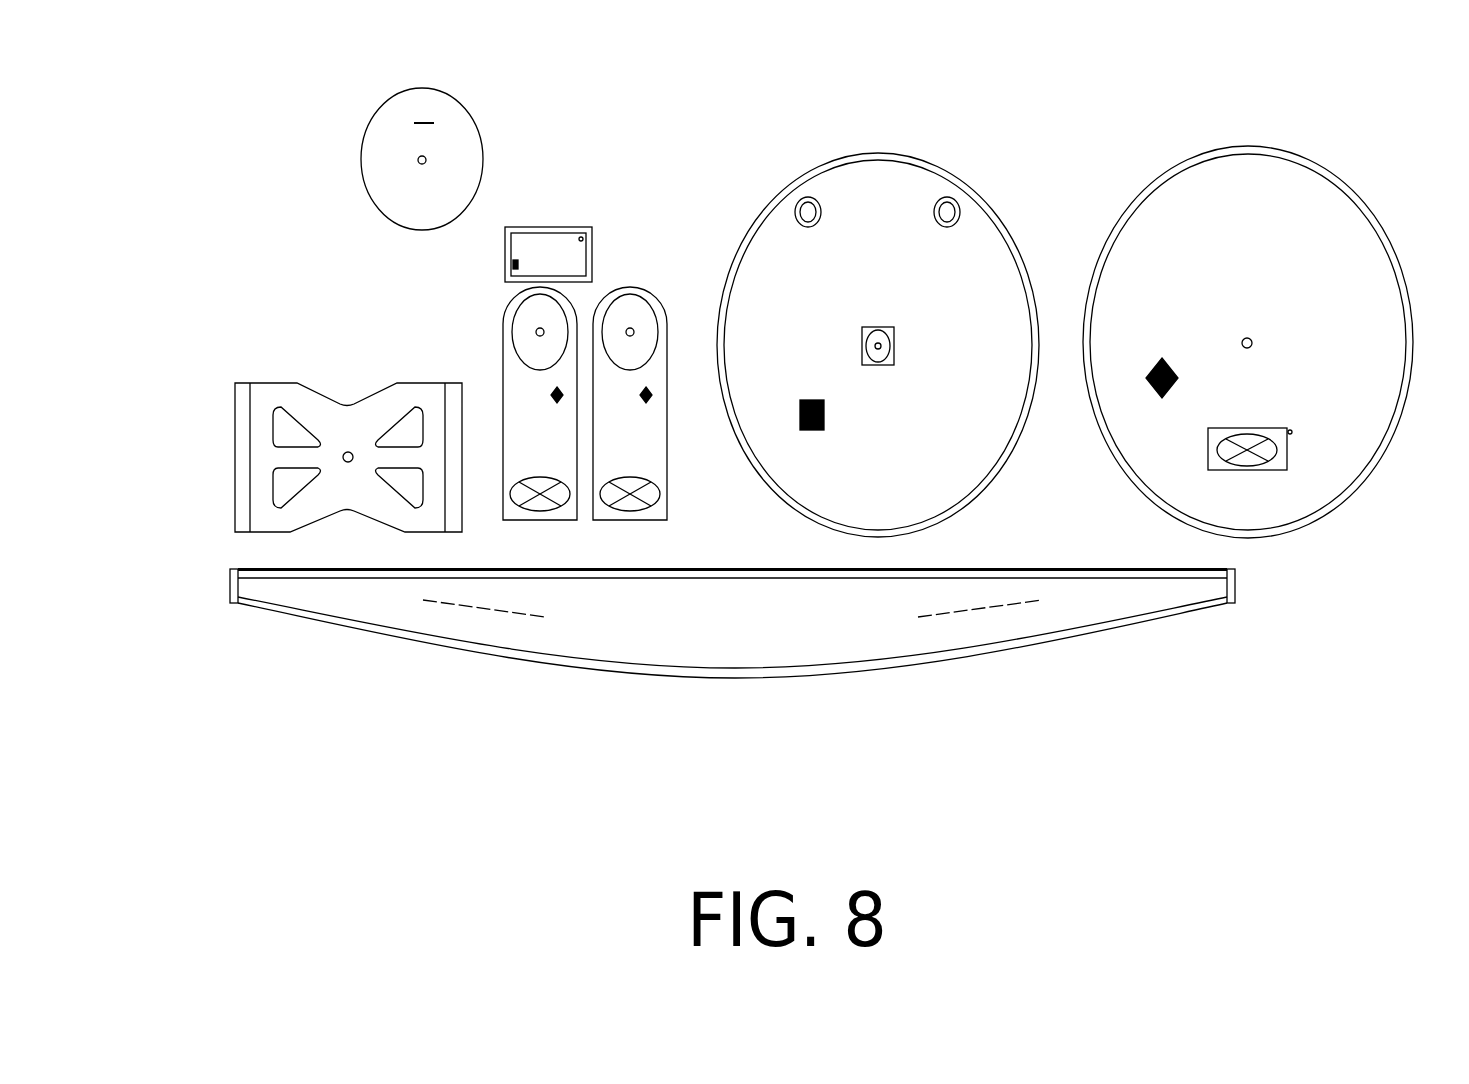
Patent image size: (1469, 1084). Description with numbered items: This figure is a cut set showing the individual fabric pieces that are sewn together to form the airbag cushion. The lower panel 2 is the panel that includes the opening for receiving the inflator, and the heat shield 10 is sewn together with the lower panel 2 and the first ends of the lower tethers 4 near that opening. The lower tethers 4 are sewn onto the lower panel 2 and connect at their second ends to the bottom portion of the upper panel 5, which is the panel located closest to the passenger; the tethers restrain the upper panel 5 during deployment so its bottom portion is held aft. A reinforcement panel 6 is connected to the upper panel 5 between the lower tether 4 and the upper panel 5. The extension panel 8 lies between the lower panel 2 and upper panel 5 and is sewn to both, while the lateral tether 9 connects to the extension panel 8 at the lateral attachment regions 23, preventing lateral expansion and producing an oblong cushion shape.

The lower panel 2 is at (893, 200).
The lower tether 4 is at (563, 325).
The upper panel 5 is at (1372, 305).
The reinforcement panel 6 is at (558, 248).
The extension panel 8 is at (260, 587).
The lateral tether 9 is at (263, 394).
The heat shield 10 is at (388, 137).
The lateral attachment regions 23 is at (993, 610).